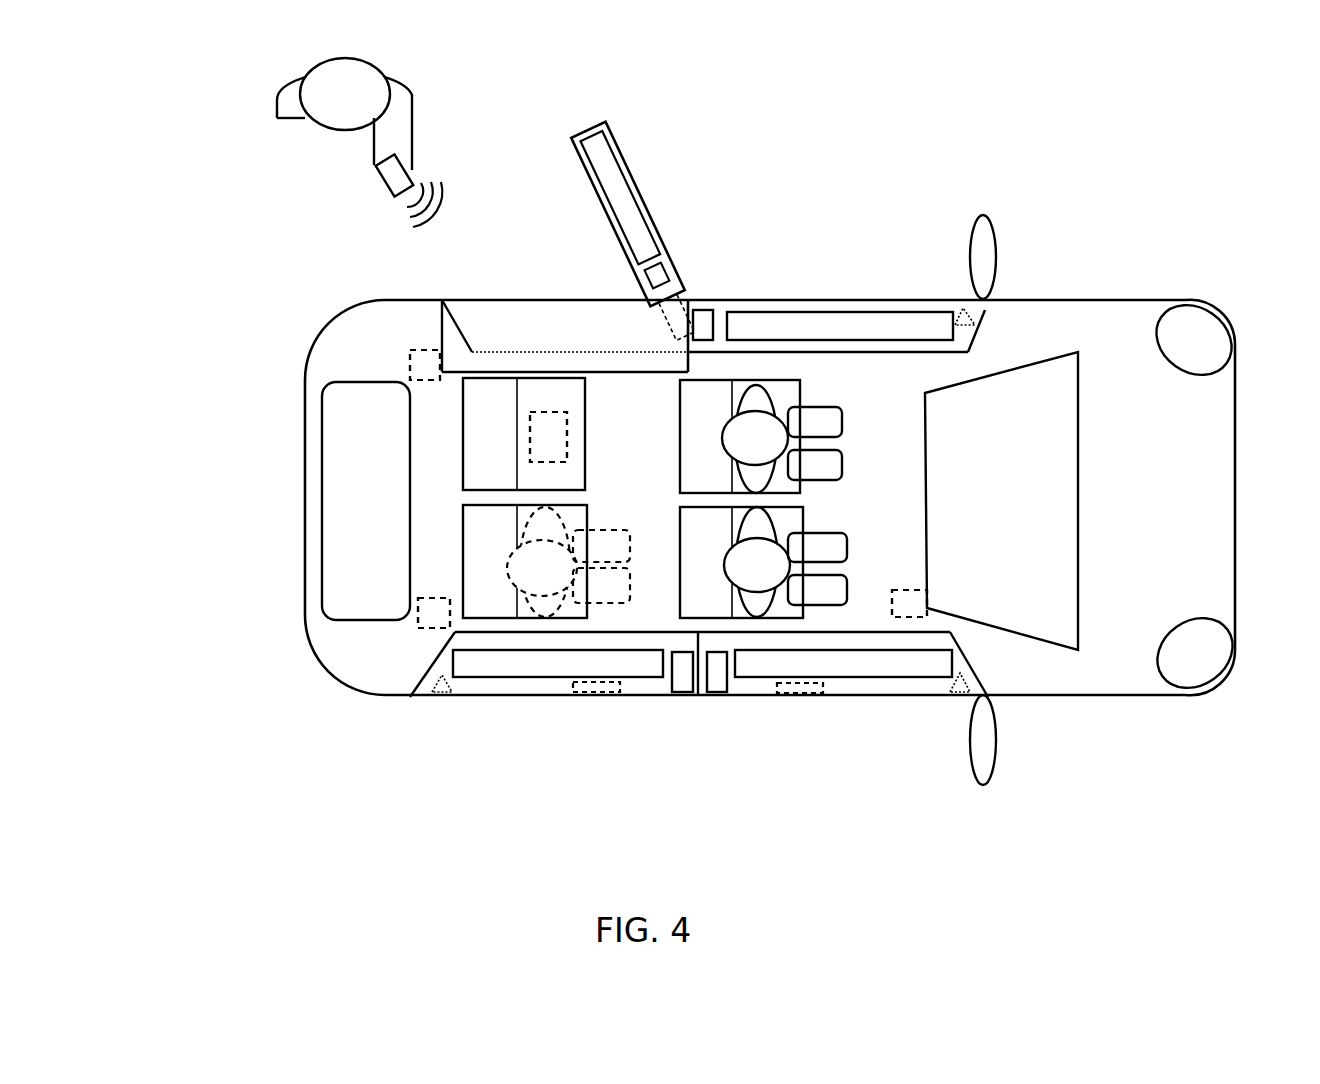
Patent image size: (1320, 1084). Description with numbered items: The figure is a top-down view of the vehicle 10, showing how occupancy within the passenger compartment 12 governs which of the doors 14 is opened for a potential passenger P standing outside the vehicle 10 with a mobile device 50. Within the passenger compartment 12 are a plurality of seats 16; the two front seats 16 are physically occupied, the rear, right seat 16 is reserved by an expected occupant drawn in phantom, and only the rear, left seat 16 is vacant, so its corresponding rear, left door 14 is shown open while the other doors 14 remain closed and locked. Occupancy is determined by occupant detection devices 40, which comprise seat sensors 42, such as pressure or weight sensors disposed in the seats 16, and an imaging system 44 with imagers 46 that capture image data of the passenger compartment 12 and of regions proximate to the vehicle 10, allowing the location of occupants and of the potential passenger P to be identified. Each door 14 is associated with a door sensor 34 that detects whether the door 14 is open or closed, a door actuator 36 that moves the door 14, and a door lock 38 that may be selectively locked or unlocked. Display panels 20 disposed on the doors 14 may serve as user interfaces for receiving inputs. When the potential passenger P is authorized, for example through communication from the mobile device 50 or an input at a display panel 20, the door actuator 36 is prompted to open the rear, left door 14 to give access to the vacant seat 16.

The vehicle 10 is at (1033, 262).
The passenger compartment 12 is at (888, 470).
The doors 14 is at (630, 172).
The seats 16 is at (702, 582).
The display panels 20 is at (681, 290).
The door sensors 34 is at (962, 310).
The door actuators 36 is at (704, 322).
The door locks 38 is at (593, 694).
The occupant detection devices 40 is at (548, 410).
The seat sensors 42 is at (548, 410).
The imaging system 44 is at (424, 598).
The imagers 46 is at (910, 607).
The mobile device 50 is at (382, 183).
The potential passenger P is at (275, 90).